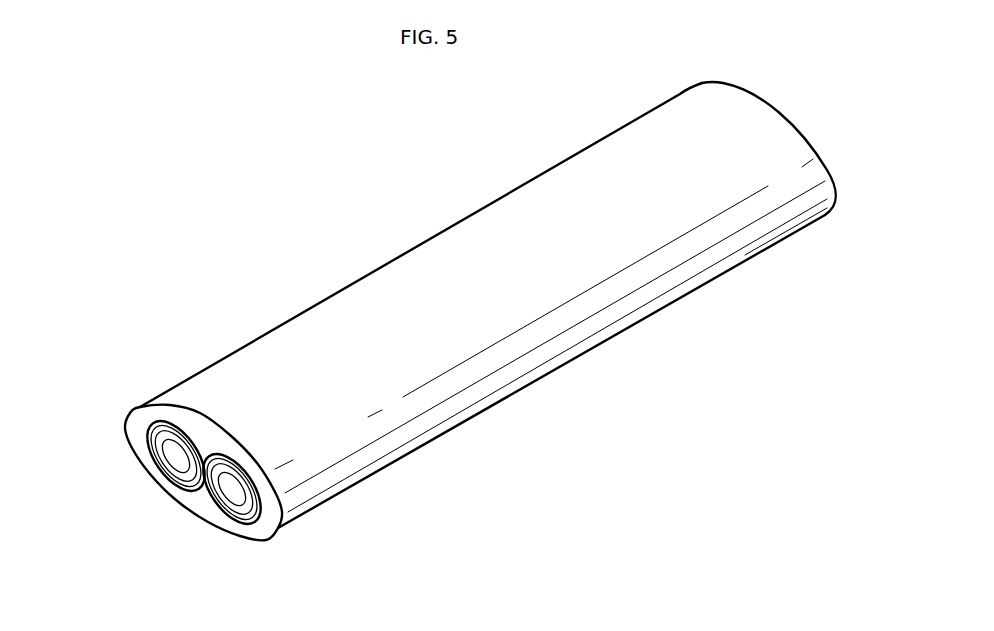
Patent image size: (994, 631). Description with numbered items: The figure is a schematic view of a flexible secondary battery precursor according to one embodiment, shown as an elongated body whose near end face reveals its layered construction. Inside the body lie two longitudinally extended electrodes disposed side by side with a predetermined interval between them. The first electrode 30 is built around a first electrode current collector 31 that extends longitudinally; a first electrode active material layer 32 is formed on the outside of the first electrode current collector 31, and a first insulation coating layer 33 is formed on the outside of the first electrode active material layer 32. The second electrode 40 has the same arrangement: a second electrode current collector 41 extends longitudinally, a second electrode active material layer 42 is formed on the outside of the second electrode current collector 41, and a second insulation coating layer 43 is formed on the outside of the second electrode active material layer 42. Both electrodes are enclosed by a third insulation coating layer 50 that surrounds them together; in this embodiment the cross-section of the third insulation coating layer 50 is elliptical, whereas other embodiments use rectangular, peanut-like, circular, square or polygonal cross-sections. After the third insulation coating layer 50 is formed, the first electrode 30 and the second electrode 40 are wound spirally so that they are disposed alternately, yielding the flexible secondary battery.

The first electrode 30 is at (124, 462).
The first electrode current collector 31 is at (172, 460).
The first electrode active material layer 32 is at (162, 453).
The first insulation coating layer 33 is at (146, 443).
The second electrode 40 is at (192, 525).
The second electrode current collector 41 is at (232, 494).
The second electrode active material layer 42 is at (238, 514).
The second insulation coating layer 43 is at (248, 518).
The third insulation coating layer 50 is at (140, 420).